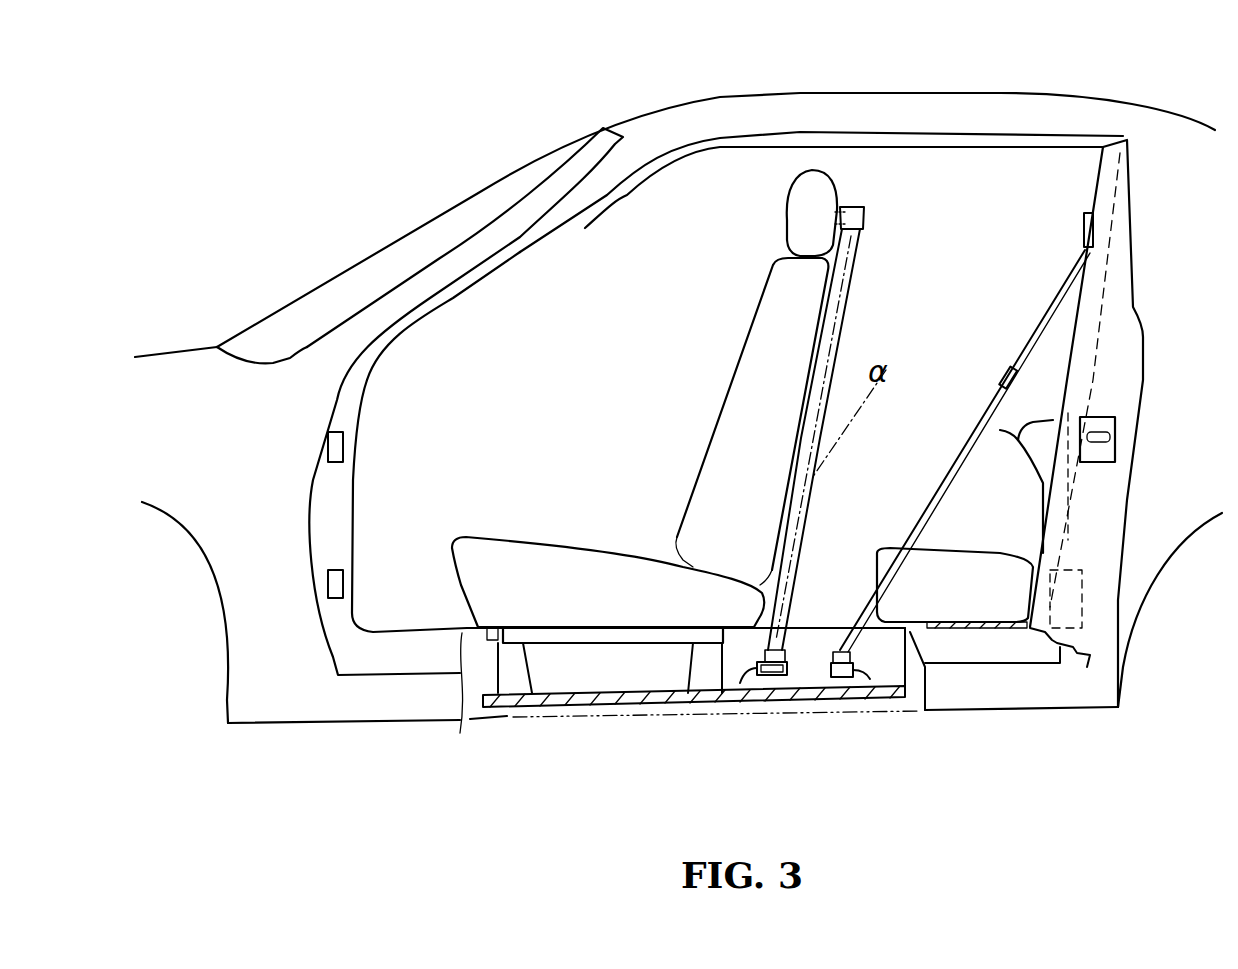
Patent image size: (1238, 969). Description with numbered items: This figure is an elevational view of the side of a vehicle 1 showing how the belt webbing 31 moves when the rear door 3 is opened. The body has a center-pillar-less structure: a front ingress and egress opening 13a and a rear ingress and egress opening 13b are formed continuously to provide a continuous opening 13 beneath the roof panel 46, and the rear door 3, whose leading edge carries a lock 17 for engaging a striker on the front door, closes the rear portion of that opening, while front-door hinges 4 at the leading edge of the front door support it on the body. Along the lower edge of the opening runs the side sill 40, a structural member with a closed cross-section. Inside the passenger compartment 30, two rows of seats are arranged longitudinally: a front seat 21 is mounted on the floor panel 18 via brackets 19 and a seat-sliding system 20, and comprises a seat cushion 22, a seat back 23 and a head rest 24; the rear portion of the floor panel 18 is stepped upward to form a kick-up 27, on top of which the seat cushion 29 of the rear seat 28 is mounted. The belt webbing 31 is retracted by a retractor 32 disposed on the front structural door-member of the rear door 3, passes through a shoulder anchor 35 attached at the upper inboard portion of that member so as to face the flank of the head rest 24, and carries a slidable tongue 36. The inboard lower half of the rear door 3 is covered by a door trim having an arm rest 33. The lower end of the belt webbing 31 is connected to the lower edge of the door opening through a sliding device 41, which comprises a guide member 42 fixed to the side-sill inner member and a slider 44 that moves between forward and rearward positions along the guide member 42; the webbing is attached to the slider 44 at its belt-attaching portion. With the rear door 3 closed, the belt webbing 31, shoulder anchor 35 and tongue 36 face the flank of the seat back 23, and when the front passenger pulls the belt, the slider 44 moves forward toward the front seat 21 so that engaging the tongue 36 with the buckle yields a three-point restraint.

The vehicle 1 is at (687, 75).
The roof panel 46 is at (818, 93).
The continuous opening 13 is at (896, 157).
The front ingress and egress opening 13a is at (503, 270).
The rear ingress and egress opening 13b is at (990, 150).
The rear door 3 is at (1140, 437).
The lock 17 is at (1100, 417).
The side sill 40 is at (418, 725).
The front-door hinges 4 is at (328, 447).
The front seat 21 is at (712, 385).
The seat cushion 22 is at (570, 538).
The seat back 23 is at (752, 325).
The head rest 24 is at (787, 213).
The passenger compartment 30 is at (895, 300).
The arm rest 33 is at (1000, 432).
The belt webbing 31 is at (1032, 330).
The shoulder anchor 35 is at (1083, 232).
The tongue 36 is at (998, 378).
The rear seat 28 is at (975, 535).
The seat cushion 29 is at (897, 547).
The sliding device 41 is at (825, 640).
The guide member 42 is at (805, 678).
The slider 44 is at (845, 678).
The seat-sliding system 20 is at (620, 643).
The brackets 19 is at (512, 690).
The floor panel 18 is at (583, 705).
The kick-up 27 is at (927, 672).
The retractor 32 is at (1078, 610).